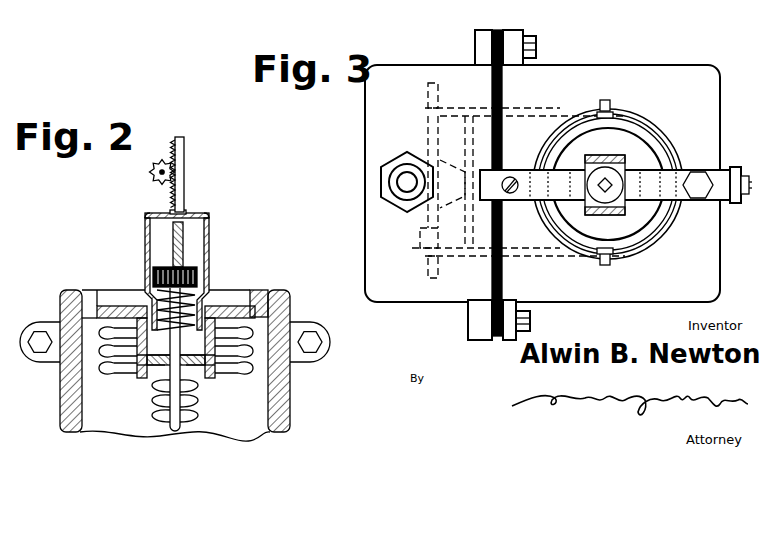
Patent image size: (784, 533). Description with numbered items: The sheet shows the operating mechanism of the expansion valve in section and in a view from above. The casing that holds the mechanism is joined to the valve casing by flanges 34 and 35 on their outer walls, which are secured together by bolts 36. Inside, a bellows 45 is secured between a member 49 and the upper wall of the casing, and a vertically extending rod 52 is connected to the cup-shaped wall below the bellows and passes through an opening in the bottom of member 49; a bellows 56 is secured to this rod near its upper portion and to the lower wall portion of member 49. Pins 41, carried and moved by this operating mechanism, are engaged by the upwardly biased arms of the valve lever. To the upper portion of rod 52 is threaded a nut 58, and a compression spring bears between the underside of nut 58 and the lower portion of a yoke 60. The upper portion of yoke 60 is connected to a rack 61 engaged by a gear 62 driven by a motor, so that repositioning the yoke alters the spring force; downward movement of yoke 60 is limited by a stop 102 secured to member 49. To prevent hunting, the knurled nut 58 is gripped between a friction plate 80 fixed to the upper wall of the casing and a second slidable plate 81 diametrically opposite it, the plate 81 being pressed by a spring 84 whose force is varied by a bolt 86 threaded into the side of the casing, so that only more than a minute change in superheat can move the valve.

In FIG. 3, the flange 34 is at (486, 31).
In FIG. 3, the flange 35 is at (507, 33).
In FIG. 3, the bolt 36 is at (536, 47).
In FIG. 3, the pin 41 is at (605, 100).
In FIG. 2, the bellows 45 is at (260, 360).
In FIG. 2, the member 49 is at (112, 294).
In FIG. 2, the rod 52 is at (182, 430).
In FIG. 2, the bellows 56 is at (152, 406).
In FIG. 3, the nut 58 is at (608, 160).
In FIG. 2, the yoke 60 is at (210, 268).
In FIG. 2, the rack 61 is at (186, 177).
In FIG. 2, the gear 62 is at (152, 164).
In FIG. 3, the friction plate 80 is at (519, 200).
In FIG. 3, the plate 81 is at (652, 180).
In FIG. 3, the spring 84 is at (740, 172).
In FIG. 3, the bolt 86 is at (745, 196).
In FIG. 2, the stop 102 is at (125, 306).